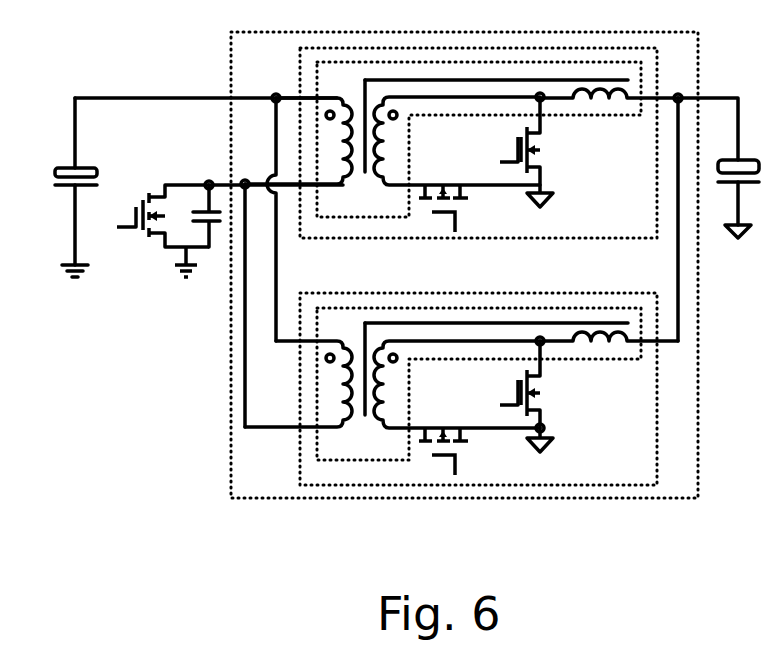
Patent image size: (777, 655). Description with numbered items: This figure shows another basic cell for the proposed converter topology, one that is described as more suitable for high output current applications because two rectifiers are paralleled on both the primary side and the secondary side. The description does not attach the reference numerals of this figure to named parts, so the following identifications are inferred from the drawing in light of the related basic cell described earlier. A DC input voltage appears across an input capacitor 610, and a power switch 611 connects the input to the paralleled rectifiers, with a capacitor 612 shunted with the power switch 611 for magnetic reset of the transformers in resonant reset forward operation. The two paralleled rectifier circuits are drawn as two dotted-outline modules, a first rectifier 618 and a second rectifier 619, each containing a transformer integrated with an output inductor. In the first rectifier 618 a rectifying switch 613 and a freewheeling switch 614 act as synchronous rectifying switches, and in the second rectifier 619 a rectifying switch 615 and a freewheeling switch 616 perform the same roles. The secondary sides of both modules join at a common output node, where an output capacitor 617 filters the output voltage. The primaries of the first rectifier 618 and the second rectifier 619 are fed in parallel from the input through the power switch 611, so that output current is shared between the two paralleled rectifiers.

The input capacitor 610 is at (52, 187).
The input switch transistor 611 is at (155, 231).
The input filter capacitor node 612 is at (262, 203).
The synchronous rectifier transistor 613 is at (443, 195).
The output switch transistor 614 is at (511, 152).
The synchronous rectifier transistor 615 is at (443, 439).
The output switch transistor 616 is at (515, 396).
The output capacitor 617 is at (718, 168).
The first converter module 618 is at (317, 73).
The second converter module 619 is at (317, 389).